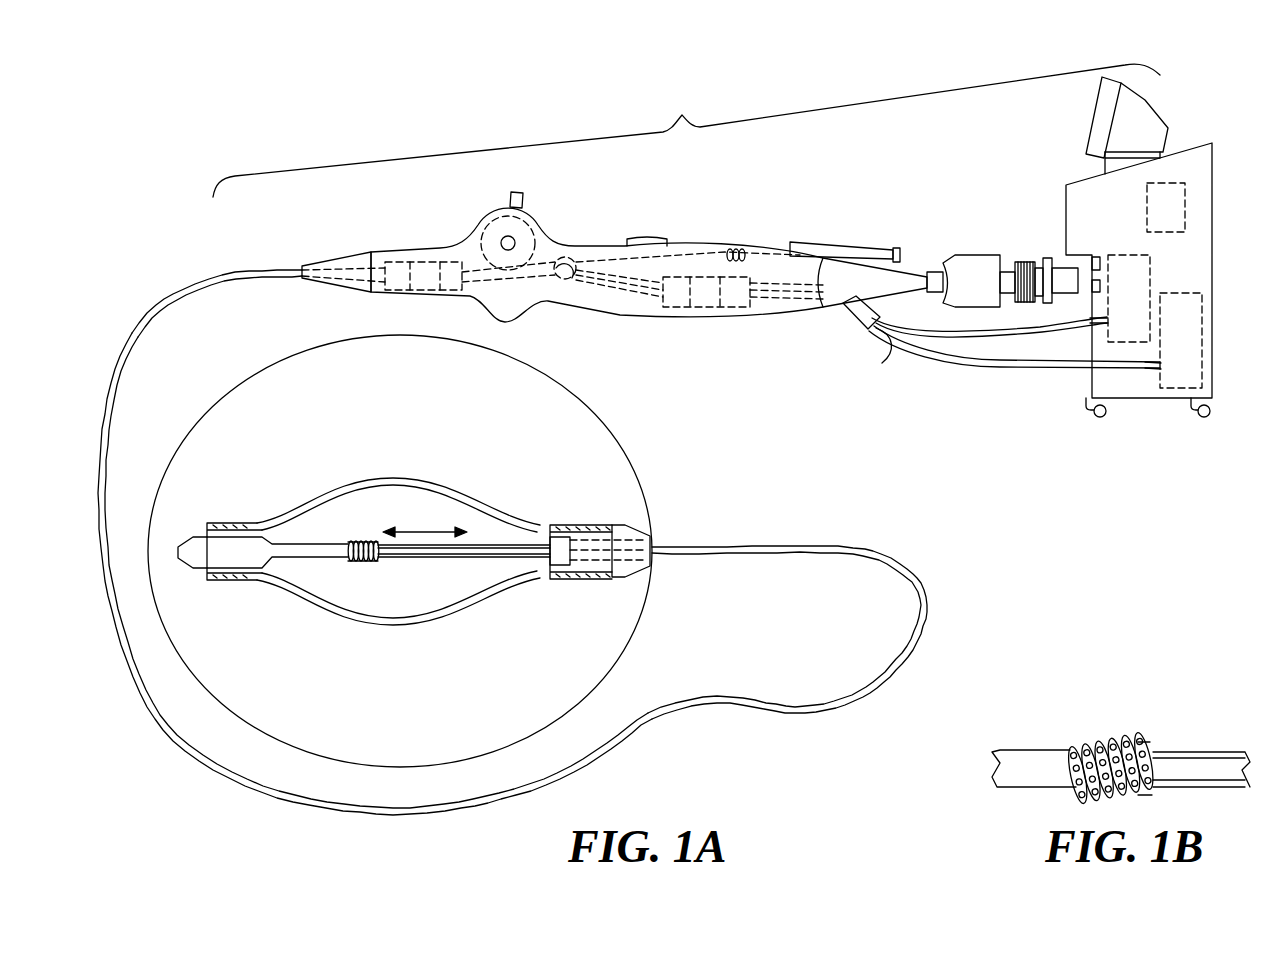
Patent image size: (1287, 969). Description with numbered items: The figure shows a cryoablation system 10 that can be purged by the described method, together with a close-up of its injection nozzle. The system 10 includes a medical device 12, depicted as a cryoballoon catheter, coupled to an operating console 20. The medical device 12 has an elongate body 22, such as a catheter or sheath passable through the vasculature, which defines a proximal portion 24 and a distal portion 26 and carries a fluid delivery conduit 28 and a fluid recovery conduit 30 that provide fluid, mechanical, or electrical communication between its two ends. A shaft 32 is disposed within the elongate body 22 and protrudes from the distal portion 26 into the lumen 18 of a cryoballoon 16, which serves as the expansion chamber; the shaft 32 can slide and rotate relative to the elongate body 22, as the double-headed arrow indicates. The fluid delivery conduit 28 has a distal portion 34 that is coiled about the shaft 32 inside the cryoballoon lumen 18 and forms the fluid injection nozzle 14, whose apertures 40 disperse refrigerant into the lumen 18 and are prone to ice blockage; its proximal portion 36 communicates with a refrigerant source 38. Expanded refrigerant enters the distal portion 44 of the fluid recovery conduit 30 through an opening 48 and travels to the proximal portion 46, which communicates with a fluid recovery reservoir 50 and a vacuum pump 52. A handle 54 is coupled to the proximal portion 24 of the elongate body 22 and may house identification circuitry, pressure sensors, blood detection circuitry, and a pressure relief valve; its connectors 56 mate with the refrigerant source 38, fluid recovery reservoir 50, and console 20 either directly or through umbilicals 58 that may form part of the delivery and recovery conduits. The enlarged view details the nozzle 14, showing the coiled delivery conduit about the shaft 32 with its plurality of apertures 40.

In FIG. 1A, the cryoablation system 10 is at (686, 130).
In FIG. 1A, the medical device 12 is at (402, 205).
In FIG. 1A, the fluid injection nozzle 14 is at (354, 541).
In FIG. 1B, the fluid injection nozzle 14 is at (1110, 740).
In FIG. 1A, the cryoballoon 16 is at (436, 478).
In FIG. 1A, the cryoballoon lumen 18 is at (406, 590).
In FIG. 1A, the console 20 is at (1100, 216).
In FIG. 1A, the elongate body 22 is at (170, 745).
In FIG. 1A, the proximal portion 24 is at (208, 274).
In FIG. 1A, the distal portion 26 is at (760, 547).
In FIG. 1A, the fluid delivery conduit 28 is at (913, 350).
In FIG. 1A, the fluid recovery conduit 30 is at (958, 340).
In FIG. 1A, the shaft 32 is at (290, 540).
In FIG. 1B, the shaft 32 is at (1020, 749).
In FIG. 1A, the distal portion of the fluid delivery conduit 34 is at (638, 545).
In FIG. 1A, the proximal portion of the fluid delivery conduit 36 is at (1155, 372).
In FIG. 1A, the refrigerant source 38 is at (1193, 353).
In FIG. 1A, the apertures 40 is at (356, 563).
In FIG. 1B, the apertures 40 is at (1142, 742).
In FIG. 1A, the distal portion of the fluid recovery conduit 44 is at (640, 555).
In FIG. 1A, the proximal portion of the fluid recovery conduit 46 is at (1098, 325).
In FIG. 1A, the opening 48 is at (540, 572).
In FIG. 1A, the fluid recovery reservoir 50 is at (1141, 316).
In FIG. 1A, the vacuum pump 52 is at (1142, 250).
In FIG. 1A, the handle 54 is at (737, 250).
In FIG. 1A, the connectors 56 is at (1025, 262).
In FIG. 1A, the umbilicals 58 is at (880, 343).